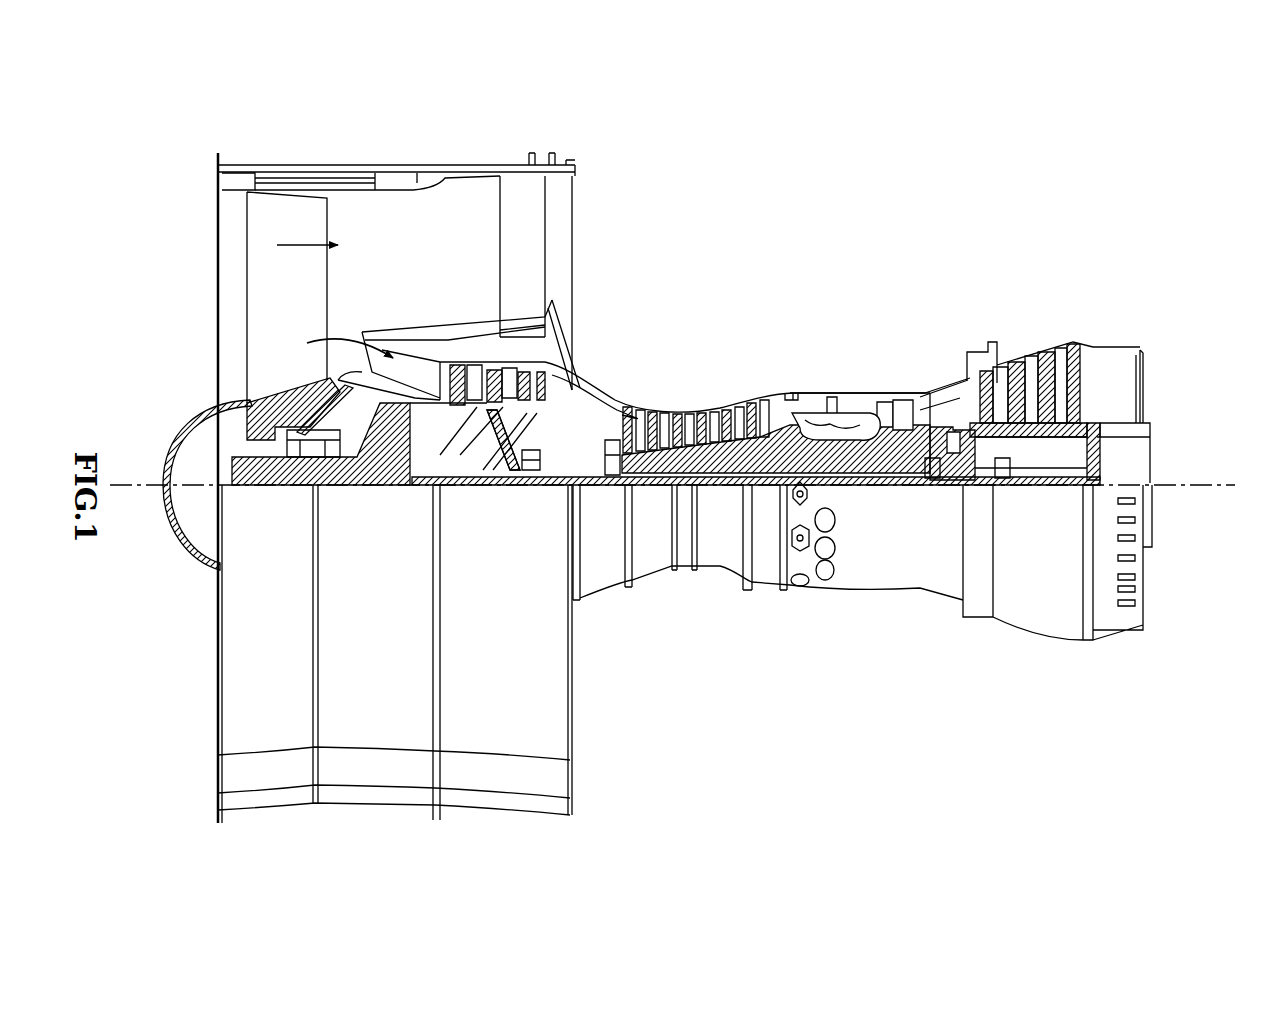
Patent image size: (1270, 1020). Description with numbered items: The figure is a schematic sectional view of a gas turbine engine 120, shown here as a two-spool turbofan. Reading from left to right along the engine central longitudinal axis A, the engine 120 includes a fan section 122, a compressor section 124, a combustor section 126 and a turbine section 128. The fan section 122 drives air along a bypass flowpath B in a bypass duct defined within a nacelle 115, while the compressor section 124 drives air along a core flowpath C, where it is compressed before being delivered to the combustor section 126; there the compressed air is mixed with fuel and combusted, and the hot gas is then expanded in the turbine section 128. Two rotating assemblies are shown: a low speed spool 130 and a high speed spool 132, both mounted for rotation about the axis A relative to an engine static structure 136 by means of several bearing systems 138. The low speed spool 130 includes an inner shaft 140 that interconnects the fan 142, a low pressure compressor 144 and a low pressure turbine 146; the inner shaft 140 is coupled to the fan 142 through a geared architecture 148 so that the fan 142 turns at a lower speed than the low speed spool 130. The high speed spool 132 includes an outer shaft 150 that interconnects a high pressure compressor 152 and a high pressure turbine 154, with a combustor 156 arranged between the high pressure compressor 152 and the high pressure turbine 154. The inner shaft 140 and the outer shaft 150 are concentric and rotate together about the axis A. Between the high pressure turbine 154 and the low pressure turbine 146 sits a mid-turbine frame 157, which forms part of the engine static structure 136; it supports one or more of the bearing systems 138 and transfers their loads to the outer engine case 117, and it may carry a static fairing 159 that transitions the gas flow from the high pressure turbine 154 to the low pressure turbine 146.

The gas turbine engine 120 is at (1125, 188).
The fan section 122 is at (360, 150).
The nacelle 115 is at (443, 173).
The fan 142 is at (307, 294).
The low pressure compressor 144 is at (497, 368).
The compressor section 124 is at (590, 382).
The bearing systems 138 is at (613, 438).
The high pressure compressor 152 is at (727, 442).
The high speed spool 132 is at (760, 437).
The combustor section 126 is at (808, 378).
The combustor 156 is at (838, 422).
The high pressure turbine 154 is at (897, 397).
The outer engine case 117 is at (943, 383).
The mid-turbine frame 157 is at (940, 398).
The static fairing 159 is at (942, 413).
The turbine section 128 is at (1010, 333).
The low pressure turbine 146 is at (1052, 345).
The geared architecture 148 is at (400, 447).
The outer shaft 150 is at (848, 470).
The inner shaft 140 is at (587, 490).
The low speed spool 130 is at (727, 492).
The engine static structure 136 is at (762, 595).
The engine central longitudinal axis A is at (1180, 483).
The bypass flowpath B is at (312, 244).
The core flowpath C is at (337, 345).